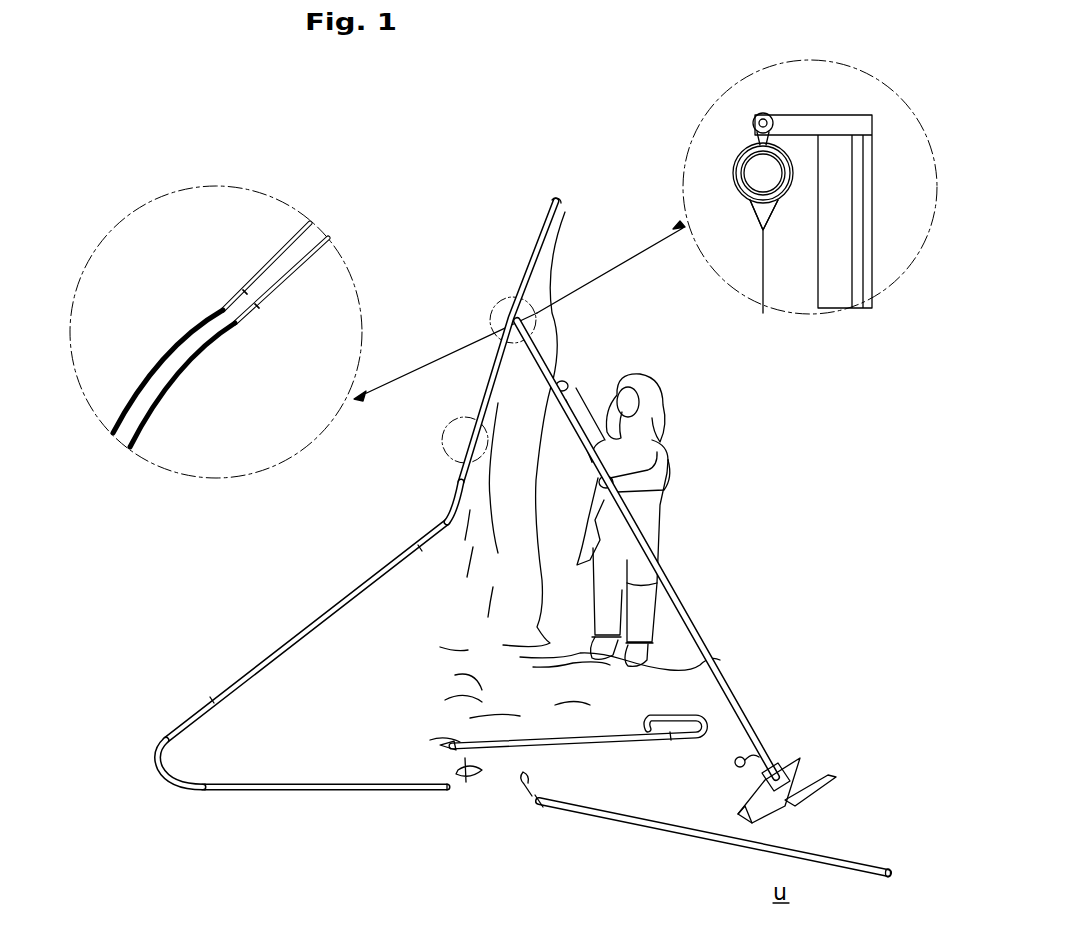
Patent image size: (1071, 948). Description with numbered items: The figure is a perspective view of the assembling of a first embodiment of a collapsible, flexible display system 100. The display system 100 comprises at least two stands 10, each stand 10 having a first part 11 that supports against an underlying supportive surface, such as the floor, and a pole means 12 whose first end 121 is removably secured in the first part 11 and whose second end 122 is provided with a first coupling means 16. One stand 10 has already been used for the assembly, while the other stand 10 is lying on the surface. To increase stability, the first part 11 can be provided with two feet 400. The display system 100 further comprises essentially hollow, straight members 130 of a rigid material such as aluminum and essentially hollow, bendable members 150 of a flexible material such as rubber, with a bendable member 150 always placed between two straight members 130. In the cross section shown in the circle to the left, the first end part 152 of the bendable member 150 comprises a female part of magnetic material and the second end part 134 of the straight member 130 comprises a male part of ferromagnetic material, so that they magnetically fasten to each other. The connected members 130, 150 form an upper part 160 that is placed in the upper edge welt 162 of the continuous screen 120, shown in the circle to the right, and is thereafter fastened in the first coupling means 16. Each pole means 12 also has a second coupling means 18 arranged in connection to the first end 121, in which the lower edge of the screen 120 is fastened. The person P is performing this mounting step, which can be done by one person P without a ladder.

The collapsible, flexible display system 100 is at (483, 170).
The stand 10 is at (740, 574).
The first part 11 is at (800, 760).
The pole means 12 is at (696, 622).
The first coupling means 16 is at (525, 797).
The second coupling means 18 is at (733, 761).
The continuous screen 120 is at (563, 247).
The first end 121 is at (774, 768).
The second end 122 is at (872, 140).
The straight member 130 is at (287, 278).
The second end part 134 is at (230, 303).
The bendable member 150 is at (152, 417).
The first end part 152 is at (200, 328).
The upper part 160 is at (766, 228).
The upper edge welt 162 is at (748, 205).
The feet 400 is at (818, 792).
The person P is at (670, 440).